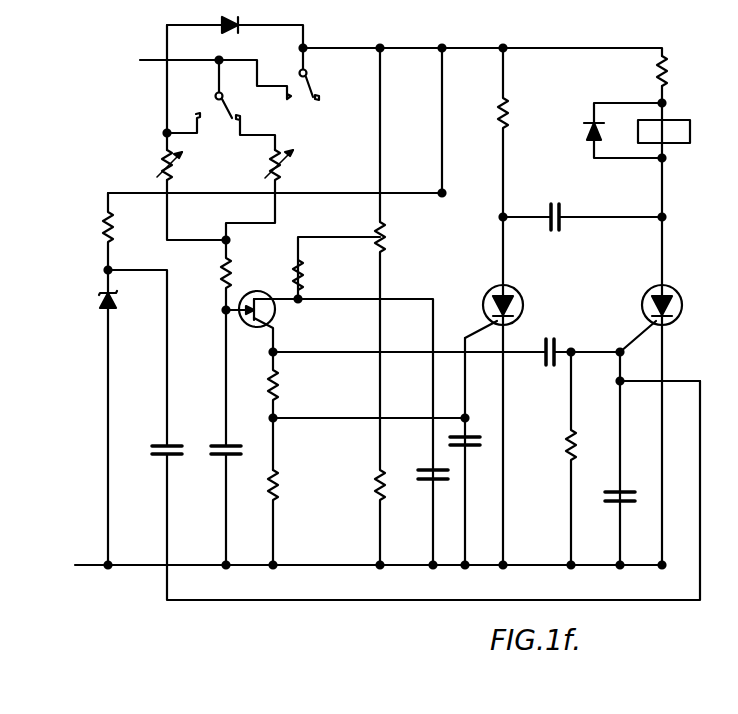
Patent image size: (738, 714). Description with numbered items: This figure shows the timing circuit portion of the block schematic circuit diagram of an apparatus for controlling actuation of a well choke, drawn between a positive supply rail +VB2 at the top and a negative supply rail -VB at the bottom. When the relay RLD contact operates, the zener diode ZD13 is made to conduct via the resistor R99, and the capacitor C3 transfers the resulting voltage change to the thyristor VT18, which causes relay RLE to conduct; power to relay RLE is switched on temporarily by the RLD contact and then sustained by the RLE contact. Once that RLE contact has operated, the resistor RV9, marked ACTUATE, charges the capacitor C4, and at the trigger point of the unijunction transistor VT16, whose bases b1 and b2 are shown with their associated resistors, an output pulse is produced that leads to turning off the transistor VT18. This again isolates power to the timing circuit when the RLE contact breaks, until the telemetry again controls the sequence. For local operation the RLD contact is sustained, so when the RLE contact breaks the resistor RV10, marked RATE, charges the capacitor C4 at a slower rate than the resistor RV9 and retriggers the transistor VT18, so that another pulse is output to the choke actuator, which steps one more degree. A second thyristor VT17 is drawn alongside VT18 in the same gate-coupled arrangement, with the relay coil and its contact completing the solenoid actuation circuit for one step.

The positive supply + VB2 is at (184, 74).
The resistor RV9 is at (160, 158).
The resistor RV10 is at (287, 168).
The resistor R99 is at (117, 222).
The zener diode ZD13 is at (112, 308).
The capacitor C3 is at (162, 440).
The capacitor C4 is at (222, 440).
The transistor VT16 is at (255, 292).
The terminal b1 is at (278, 350).
The terminal b2 is at (300, 295).
The thyristor VT17 is at (538, 287).
The transistor VT18 is at (700, 287).
The negative supply - VB is at (363, 580).